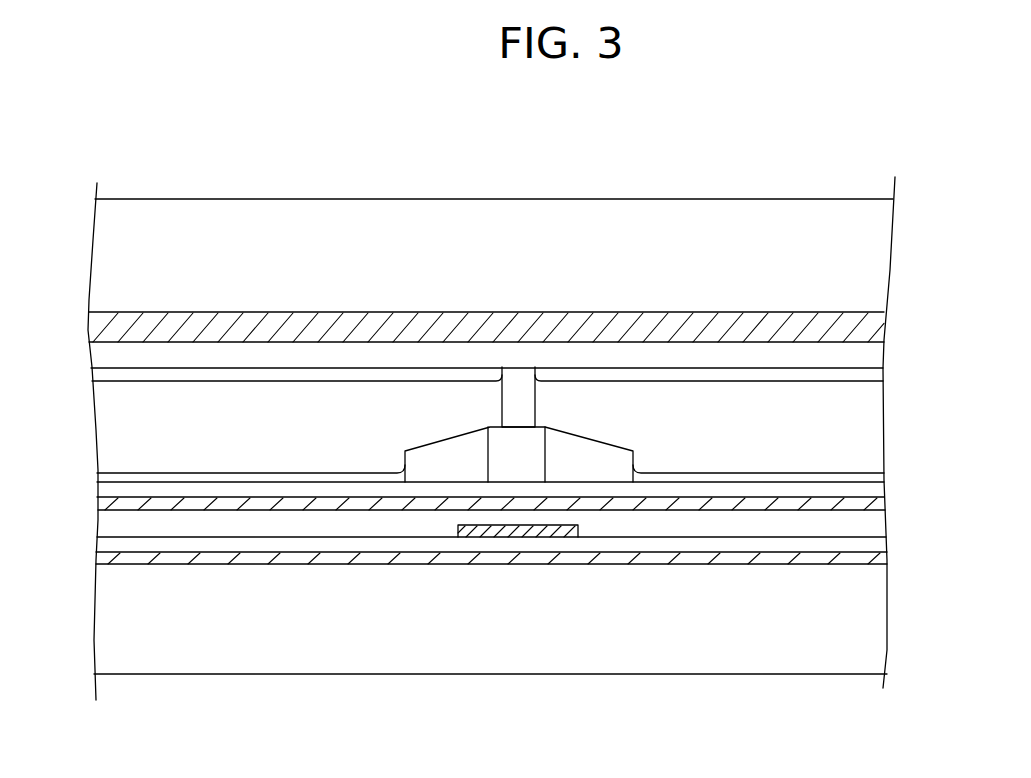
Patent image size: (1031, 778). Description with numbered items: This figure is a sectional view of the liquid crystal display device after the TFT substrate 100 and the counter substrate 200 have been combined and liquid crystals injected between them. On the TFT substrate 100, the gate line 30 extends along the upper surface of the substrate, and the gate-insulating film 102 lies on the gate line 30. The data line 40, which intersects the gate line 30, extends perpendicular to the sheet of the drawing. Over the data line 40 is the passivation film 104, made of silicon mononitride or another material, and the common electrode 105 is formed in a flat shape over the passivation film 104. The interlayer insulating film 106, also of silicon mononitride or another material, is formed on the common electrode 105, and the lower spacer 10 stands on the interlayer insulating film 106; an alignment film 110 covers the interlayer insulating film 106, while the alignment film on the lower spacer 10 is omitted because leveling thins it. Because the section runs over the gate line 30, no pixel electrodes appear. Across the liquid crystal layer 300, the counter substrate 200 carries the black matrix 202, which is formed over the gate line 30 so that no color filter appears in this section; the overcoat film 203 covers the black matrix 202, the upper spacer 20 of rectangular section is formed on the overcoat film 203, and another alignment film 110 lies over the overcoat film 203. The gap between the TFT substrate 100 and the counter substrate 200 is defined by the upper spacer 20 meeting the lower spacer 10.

The counter substrate 200 is at (872, 237).
The black matrix 202 is at (530, 328).
The overcoat film 203 is at (866, 353).
The alignment film 110 is at (857, 378).
The liquid crystal layer 300 is at (855, 423).
The upper spacer 20 is at (535, 407).
The lower spacer 10 is at (600, 437).
The interlayer insulating film 106 is at (870, 489).
The common electrode 105 is at (368, 510).
The passivation film 104 is at (872, 524).
The data line 40 is at (505, 537).
The gate-insulating film 102 is at (765, 540).
The gate line 30 is at (677, 556).
The TFT substrate 100 is at (873, 648).